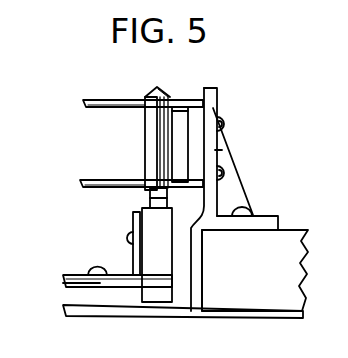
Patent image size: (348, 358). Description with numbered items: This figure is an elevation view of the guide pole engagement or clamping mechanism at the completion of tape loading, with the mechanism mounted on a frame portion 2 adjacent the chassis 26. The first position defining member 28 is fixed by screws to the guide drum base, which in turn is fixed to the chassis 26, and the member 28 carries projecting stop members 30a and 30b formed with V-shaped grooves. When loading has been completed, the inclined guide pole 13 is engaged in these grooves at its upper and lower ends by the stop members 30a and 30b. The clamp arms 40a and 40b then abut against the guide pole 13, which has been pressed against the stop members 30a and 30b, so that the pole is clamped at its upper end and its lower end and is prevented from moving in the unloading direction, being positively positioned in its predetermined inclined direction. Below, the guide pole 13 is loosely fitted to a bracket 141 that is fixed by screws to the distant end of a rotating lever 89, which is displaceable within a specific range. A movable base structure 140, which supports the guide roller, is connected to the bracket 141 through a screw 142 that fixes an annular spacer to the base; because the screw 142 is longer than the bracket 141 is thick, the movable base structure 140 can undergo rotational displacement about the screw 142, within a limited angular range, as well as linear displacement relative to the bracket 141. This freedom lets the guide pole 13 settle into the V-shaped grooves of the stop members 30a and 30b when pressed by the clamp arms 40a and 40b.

The base member 2 is at (298, 257).
The inclined guide pole 13 is at (145, 136).
The chassis 26 is at (283, 320).
The first position defining member 28 is at (235, 190).
The stop member 30a is at (178, 102).
The stop member 30b is at (168, 185).
The clamp arm 40a is at (120, 100).
The clamp arm 40b is at (97, 179).
The rotating lever 89 is at (63, 288).
The movable base structure 140 is at (171, 265).
The bracket 141 is at (75, 273).
The screw 142 is at (125, 238).